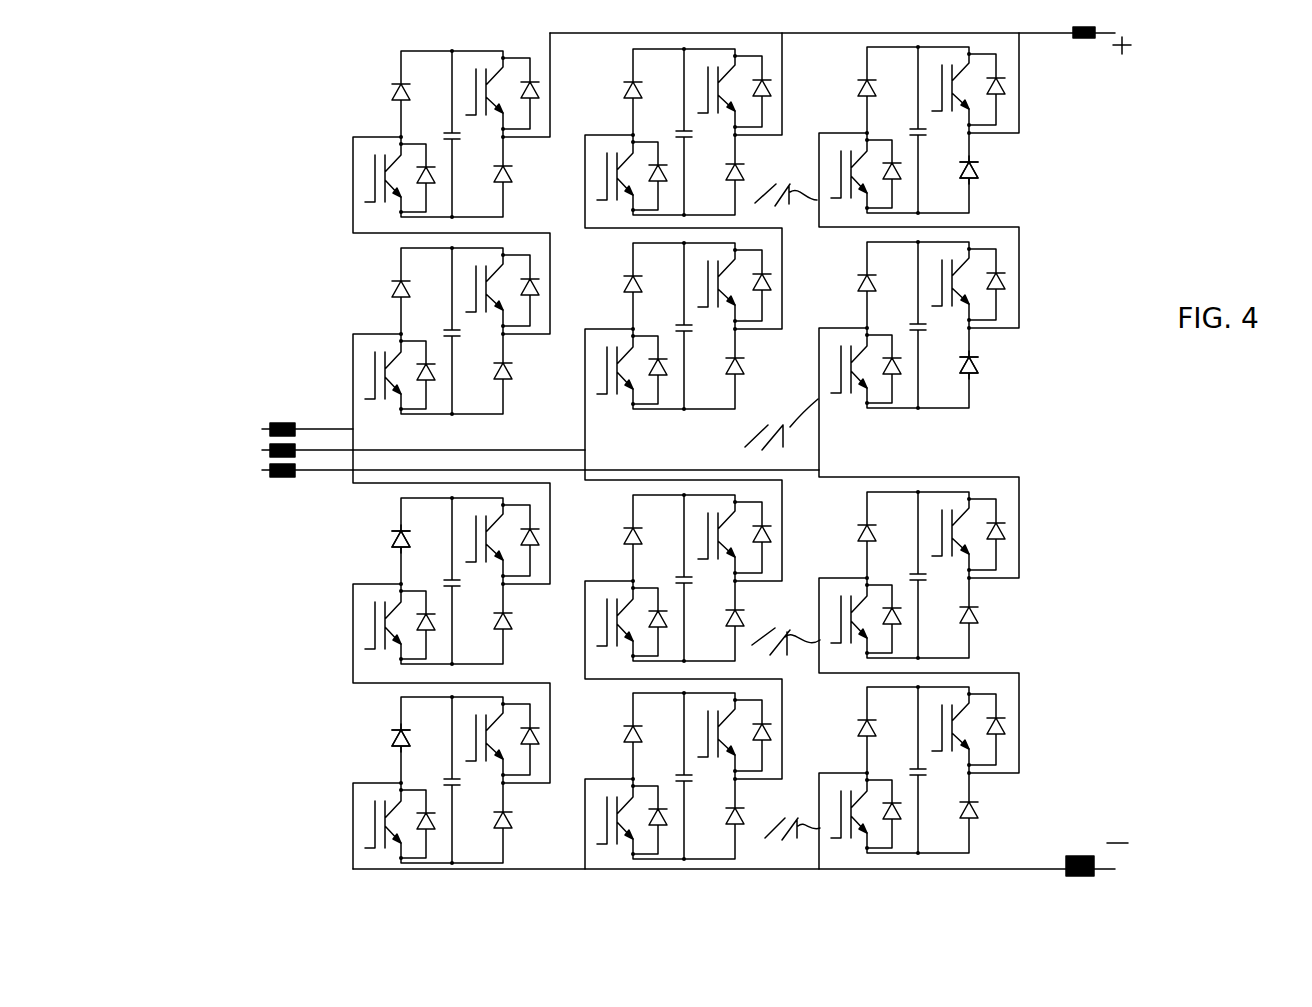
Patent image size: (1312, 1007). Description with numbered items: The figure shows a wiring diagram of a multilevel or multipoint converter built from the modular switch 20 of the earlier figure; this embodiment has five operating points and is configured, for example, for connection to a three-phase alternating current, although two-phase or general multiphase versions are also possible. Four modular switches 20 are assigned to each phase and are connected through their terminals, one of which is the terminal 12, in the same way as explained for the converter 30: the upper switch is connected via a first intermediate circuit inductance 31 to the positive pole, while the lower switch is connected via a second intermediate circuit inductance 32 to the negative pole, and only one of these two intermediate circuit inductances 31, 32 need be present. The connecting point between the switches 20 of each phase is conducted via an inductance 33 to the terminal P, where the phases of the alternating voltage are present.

The terminal 12 is at (1019, 98).
The modular switch 20 is at (955, 190).
The converter 30 is at (238, 190).
The first intermediate circuit inductance 31 is at (1088, 40).
The second intermediate circuit inductance 32 is at (1083, 850).
The inductance 33 is at (283, 478).